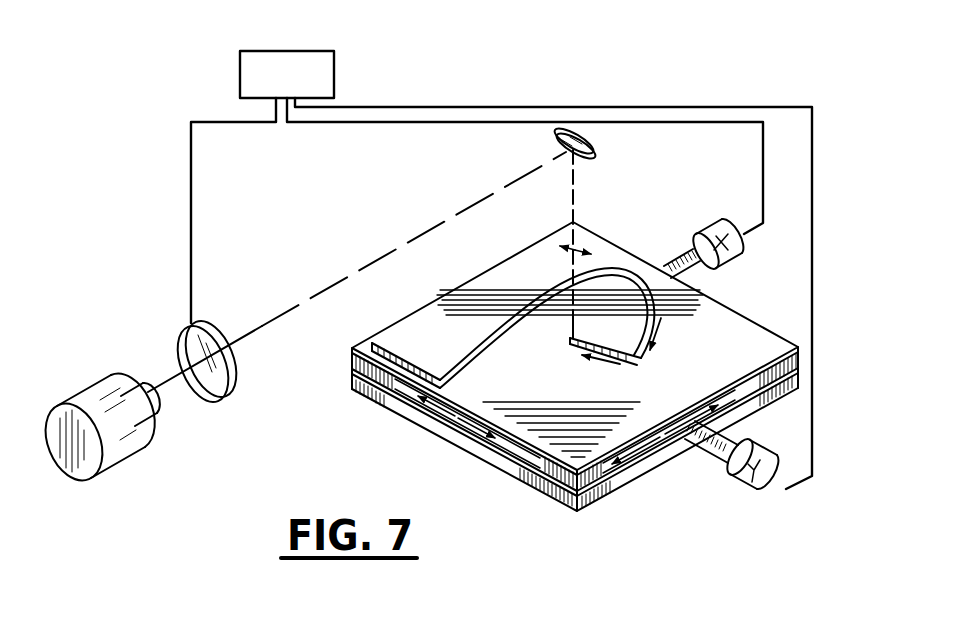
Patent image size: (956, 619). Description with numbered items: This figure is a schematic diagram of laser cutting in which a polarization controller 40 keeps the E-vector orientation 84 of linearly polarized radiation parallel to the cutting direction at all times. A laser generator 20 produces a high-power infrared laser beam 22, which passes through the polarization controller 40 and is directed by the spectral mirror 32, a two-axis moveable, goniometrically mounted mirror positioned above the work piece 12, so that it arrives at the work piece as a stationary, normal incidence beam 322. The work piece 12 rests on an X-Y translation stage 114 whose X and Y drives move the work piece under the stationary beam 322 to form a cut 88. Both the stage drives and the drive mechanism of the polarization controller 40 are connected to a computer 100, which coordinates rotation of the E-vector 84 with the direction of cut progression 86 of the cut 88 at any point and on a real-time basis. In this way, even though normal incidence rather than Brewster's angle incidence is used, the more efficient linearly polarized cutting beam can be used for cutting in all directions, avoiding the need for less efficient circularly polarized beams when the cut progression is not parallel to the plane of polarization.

The computer 100 is at (336, 77).
The spectral mirror 32 is at (560, 140).
The E-vector orientation 84 is at (575, 252).
The laser beam 22 is at (432, 228).
The polarization controller 40 is at (183, 330).
The laser generator 20 is at (92, 380).
The normal incidence beam 322 is at (570, 326).
The cut 88 is at (478, 345).
The direction of cut progression 86 is at (620, 364).
The work piece 12 is at (530, 455).
The X-Y translation stage 114 is at (614, 491).